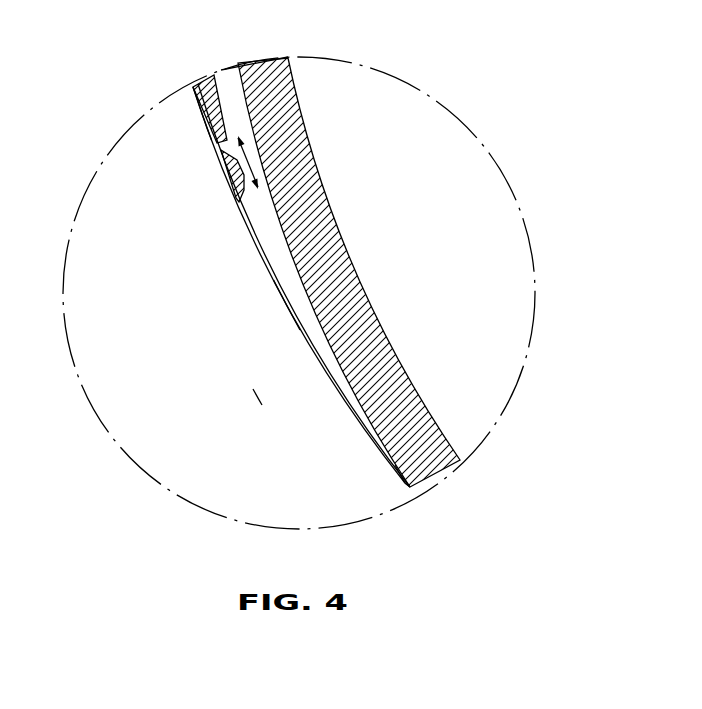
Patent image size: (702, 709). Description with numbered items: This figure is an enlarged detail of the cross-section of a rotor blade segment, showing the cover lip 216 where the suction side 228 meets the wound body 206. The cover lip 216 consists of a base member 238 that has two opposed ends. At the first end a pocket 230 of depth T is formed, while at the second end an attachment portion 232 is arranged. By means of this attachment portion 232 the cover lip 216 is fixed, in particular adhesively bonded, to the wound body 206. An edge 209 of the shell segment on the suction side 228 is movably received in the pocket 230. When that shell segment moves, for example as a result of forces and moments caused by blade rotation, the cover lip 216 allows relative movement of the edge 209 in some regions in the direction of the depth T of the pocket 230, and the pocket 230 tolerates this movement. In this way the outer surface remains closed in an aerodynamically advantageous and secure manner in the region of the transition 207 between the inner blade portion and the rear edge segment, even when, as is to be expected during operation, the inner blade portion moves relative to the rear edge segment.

The wound body 206 is at (320, 210).
The transition 207 is at (246, 380).
The edge 209 is at (205, 139).
The cover lip 216 is at (276, 328).
The suction side 228 is at (195, 83).
The pocket 230 is at (218, 189).
The attachment portion 232 is at (401, 486).
The base member 238 is at (278, 280).
The depth T is at (250, 164).